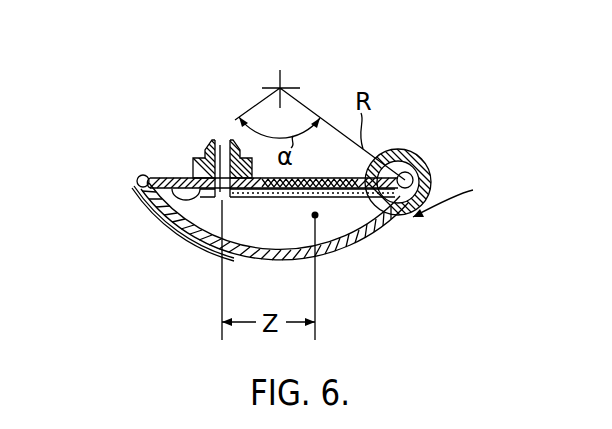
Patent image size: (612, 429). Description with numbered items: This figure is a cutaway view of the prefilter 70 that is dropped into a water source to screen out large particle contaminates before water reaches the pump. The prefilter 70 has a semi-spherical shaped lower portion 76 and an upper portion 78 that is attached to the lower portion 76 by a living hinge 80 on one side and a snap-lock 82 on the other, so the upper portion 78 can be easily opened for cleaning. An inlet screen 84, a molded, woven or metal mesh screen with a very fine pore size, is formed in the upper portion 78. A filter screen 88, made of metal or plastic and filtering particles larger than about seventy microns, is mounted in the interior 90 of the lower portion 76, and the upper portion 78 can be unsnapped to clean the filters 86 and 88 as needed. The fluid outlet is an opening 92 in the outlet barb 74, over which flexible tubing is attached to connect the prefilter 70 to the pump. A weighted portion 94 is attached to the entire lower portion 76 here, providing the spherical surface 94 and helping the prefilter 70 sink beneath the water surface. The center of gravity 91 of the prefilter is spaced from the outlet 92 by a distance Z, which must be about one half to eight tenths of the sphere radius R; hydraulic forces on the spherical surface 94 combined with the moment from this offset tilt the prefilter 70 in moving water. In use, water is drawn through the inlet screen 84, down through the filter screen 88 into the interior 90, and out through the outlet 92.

The prefilter 70 is at (460, 200).
The outlet barb 74 is at (235, 140).
The lower portion 76 is at (207, 243).
The upper portion 78 is at (180, 177).
The living hinge 80 is at (413, 150).
The snap-lock 82 is at (140, 178).
The inlet screen 84 is at (320, 178).
The filter 86 is at (165, 200).
The filter screen 88 is at (343, 230).
The interior 90 is at (273, 215).
The center of gravity 91 is at (327, 193).
The outlet opening 92 is at (220, 140).
The weighted portion 94 is at (378, 226).